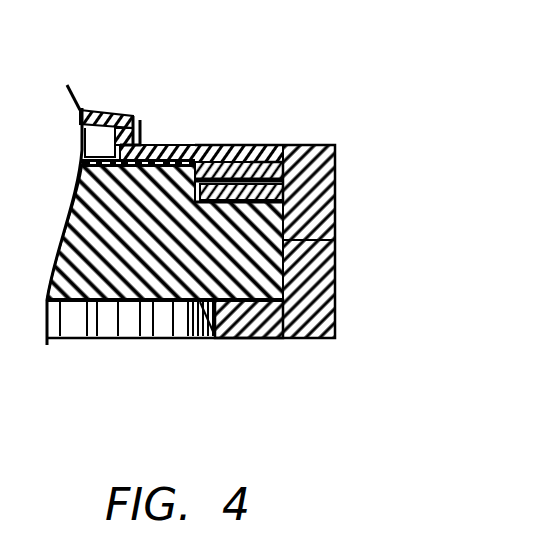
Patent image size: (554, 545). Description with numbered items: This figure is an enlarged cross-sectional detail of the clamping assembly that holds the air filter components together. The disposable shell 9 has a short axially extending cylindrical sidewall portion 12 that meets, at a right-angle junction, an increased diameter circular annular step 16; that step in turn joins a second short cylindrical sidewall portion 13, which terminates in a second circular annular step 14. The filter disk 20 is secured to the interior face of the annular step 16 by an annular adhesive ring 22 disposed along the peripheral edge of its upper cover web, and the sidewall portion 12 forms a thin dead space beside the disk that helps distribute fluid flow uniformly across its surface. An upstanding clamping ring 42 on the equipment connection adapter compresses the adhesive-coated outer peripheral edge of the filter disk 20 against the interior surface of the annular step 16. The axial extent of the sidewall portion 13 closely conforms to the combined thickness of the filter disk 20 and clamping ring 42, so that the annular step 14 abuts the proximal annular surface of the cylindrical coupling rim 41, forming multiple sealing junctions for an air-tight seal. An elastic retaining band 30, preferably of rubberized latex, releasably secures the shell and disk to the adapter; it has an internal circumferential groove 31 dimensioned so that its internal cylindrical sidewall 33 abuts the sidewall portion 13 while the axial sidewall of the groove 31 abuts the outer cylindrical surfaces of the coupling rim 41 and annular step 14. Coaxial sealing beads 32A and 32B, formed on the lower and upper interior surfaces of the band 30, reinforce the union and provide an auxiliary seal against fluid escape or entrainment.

The disposable shell 9 is at (80, 110).
The annular adhesive ring 22 is at (112, 114).
The cylindrical sidewall portion 12 is at (133, 128).
The circular annular step 16 is at (161, 158).
The filter disk 20 is at (170, 160).
The second short cylindrical sidewall portion 13 is at (208, 162).
The internal cylindrical sidewall 33 is at (230, 180).
The circular sealing bead 32B is at (268, 165).
The second circular annular step 14 is at (303, 146).
The elastic retaining band 30 is at (334, 208).
The internal circumferential groove 31 is at (334, 258).
The circular sealing bead 32A is at (250, 338).
The cylindrical coupling rim 41 is at (190, 338).
The clamping ring 42 is at (97, 307).